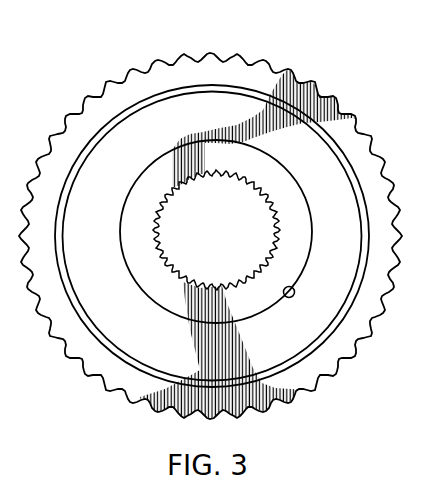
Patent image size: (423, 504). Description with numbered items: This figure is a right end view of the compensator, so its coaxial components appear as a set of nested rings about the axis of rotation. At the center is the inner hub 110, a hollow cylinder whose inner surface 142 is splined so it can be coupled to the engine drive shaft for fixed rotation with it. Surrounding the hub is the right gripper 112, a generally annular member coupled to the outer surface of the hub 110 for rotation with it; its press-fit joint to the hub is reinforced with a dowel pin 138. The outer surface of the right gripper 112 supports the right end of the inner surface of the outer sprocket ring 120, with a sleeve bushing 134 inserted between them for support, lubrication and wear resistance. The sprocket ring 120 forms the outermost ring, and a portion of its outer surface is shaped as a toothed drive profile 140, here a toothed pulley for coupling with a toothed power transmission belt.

The inner hub 110 is at (293, 192).
The right gripper 112 is at (118, 145).
The outer sprocket ring 120 is at (182, 75).
The sleeve bushing 134 is at (127, 110).
The dowel pin 138 is at (293, 296).
The drive profile 140 is at (269, 63).
The inner surface 142 is at (263, 207).